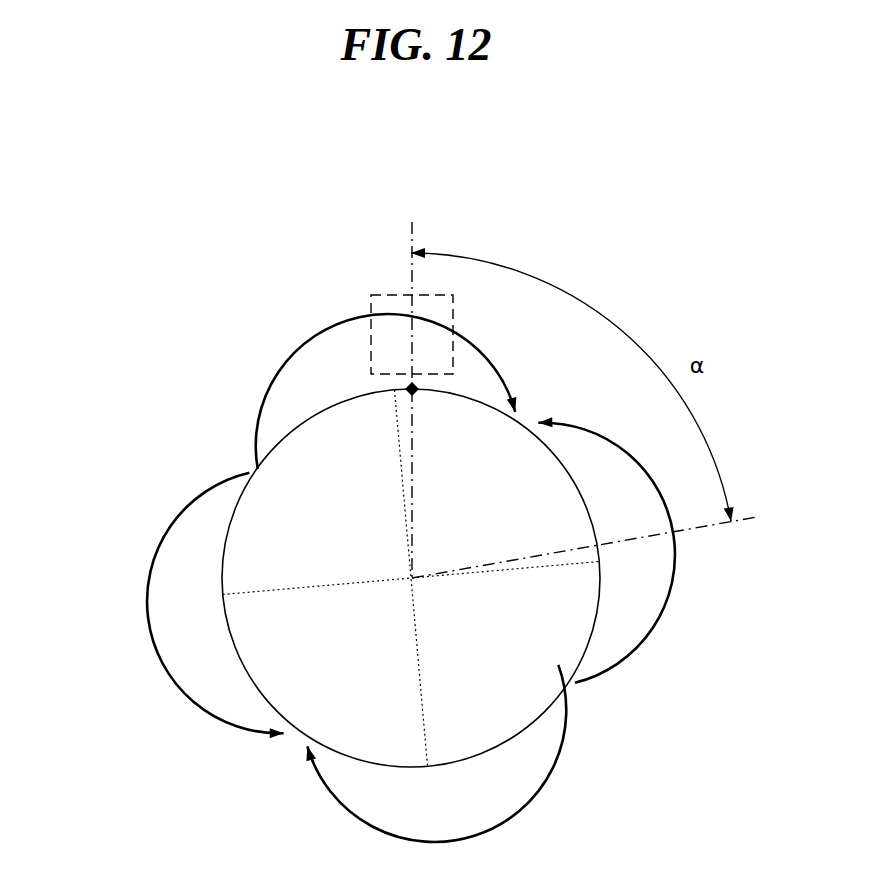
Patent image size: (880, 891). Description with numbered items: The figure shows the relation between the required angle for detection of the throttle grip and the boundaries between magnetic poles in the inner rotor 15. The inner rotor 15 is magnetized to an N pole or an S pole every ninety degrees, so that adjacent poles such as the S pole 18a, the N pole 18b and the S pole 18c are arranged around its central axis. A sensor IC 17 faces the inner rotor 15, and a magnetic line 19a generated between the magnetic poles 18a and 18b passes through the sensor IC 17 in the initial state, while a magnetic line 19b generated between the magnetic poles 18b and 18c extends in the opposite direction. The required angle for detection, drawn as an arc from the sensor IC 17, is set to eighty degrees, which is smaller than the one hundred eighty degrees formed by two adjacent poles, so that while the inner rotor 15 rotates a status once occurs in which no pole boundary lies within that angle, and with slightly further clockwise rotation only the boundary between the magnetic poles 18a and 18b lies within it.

The inner rotor 15 is at (527, 728).
The sensor IC 17 is at (376, 294).
The magnetic pole 18a is at (518, 437).
The magnetic pole 18b is at (262, 466).
The magnetic pole 18c is at (298, 737).
The magnetic line 19a is at (478, 344).
The magnetic line 19b is at (146, 600).